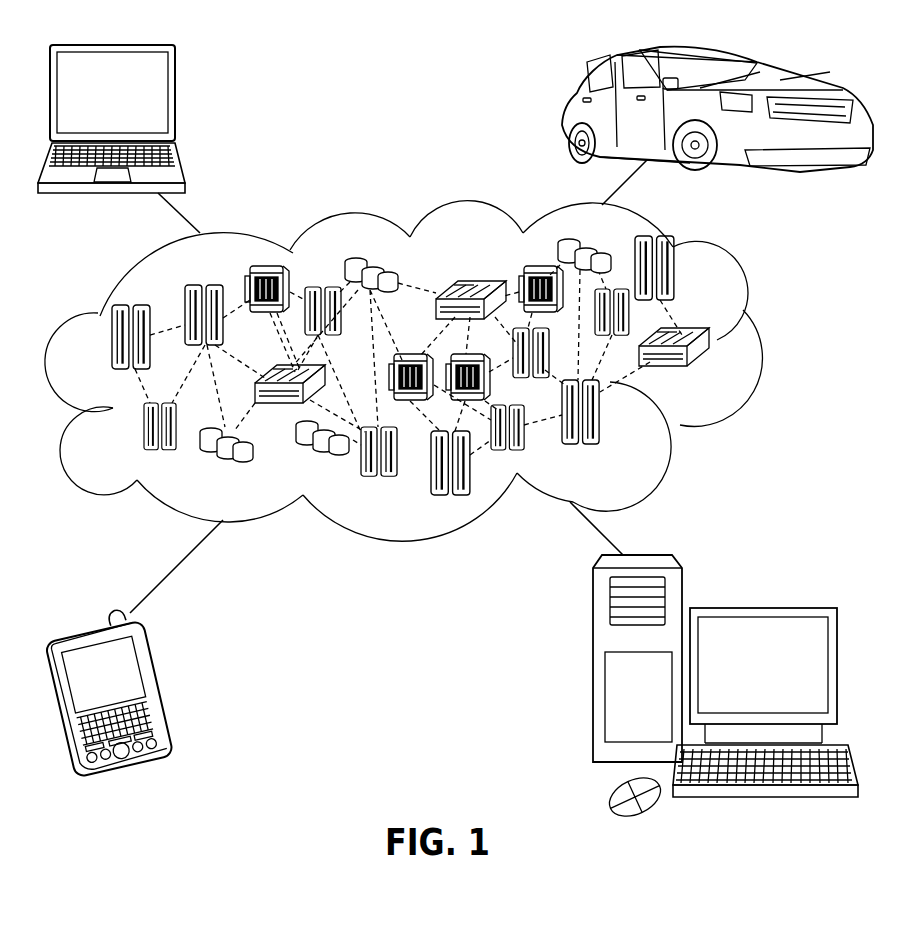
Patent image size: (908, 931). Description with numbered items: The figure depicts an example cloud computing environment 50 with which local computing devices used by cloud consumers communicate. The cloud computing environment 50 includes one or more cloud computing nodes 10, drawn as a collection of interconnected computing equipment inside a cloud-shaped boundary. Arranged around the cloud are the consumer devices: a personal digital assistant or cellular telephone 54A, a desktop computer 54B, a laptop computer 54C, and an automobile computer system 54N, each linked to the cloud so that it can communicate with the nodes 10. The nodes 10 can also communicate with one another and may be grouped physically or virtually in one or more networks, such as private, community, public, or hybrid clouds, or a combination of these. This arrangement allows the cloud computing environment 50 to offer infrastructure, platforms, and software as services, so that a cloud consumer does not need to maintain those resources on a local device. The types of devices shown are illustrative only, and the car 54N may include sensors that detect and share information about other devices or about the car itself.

The cloud computing node 10 is at (707, 372).
The cloud computing environment 50 is at (758, 345).
The personal digital assistant (PDA) or cellular telephone 54A is at (167, 693).
The desktop computer 54B is at (762, 608).
The laptop computer 54C is at (176, 100).
The automobile computer system 54N is at (563, 112).